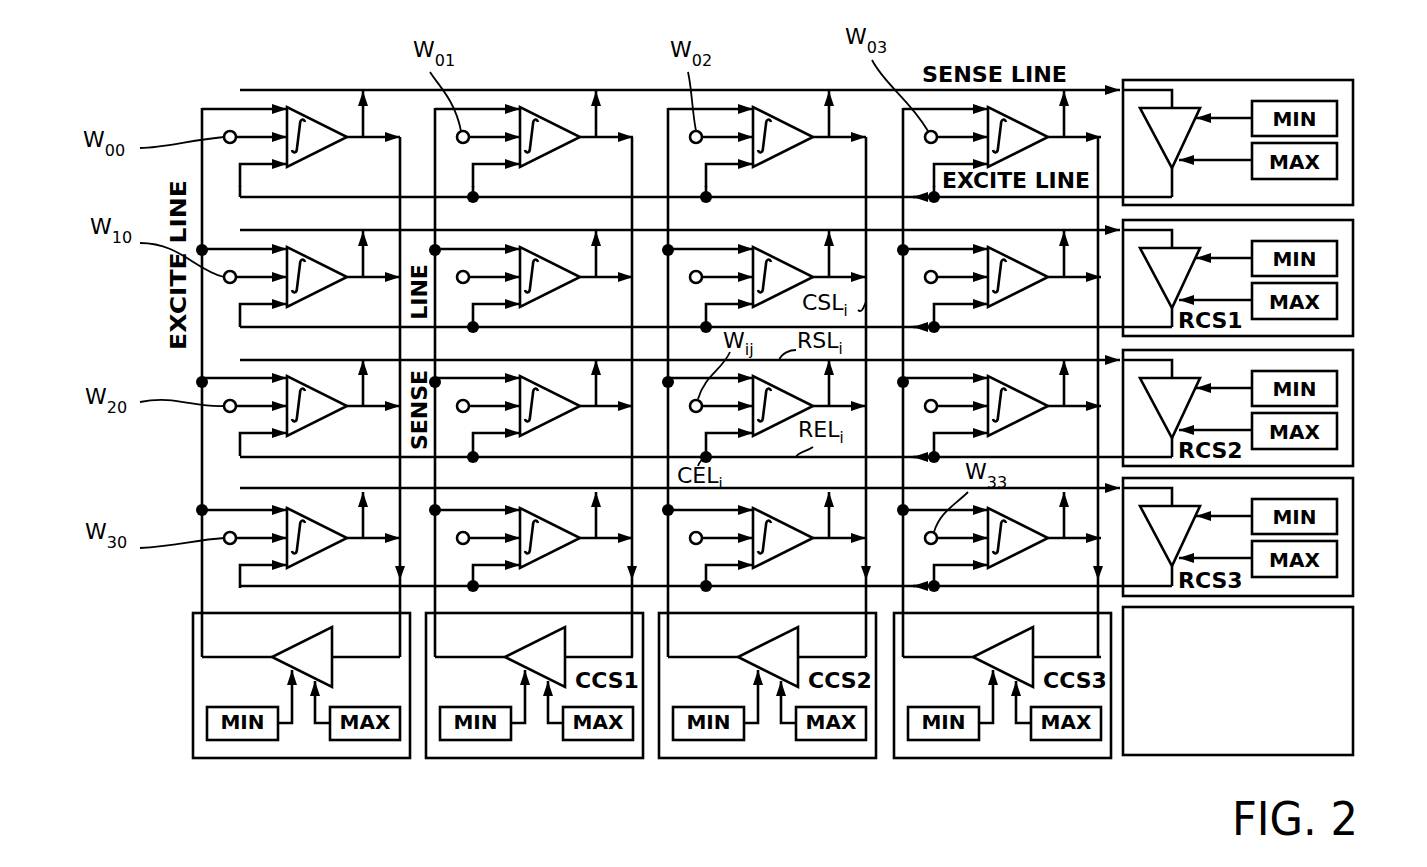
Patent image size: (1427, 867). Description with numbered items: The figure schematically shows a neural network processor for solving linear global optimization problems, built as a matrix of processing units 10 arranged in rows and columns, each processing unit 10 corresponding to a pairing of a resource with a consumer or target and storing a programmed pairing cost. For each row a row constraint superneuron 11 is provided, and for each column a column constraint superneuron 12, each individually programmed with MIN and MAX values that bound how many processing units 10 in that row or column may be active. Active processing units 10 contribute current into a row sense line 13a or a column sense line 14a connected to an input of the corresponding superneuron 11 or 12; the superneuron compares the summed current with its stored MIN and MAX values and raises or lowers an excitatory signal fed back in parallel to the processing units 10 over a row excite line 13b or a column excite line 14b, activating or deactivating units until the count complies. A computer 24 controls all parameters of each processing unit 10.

The processing unit 10 is at (301, 139).
The row constraint superneuron 11 is at (1262, 80).
The column constraint superneuron 12 is at (305, 758).
The row sense line 13a is at (507, 90).
The row excite line 13b is at (551, 197).
The column sense line 14a is at (402, 142).
The column excite line 14b is at (220, 108).
The computer 24 is at (1355, 655).